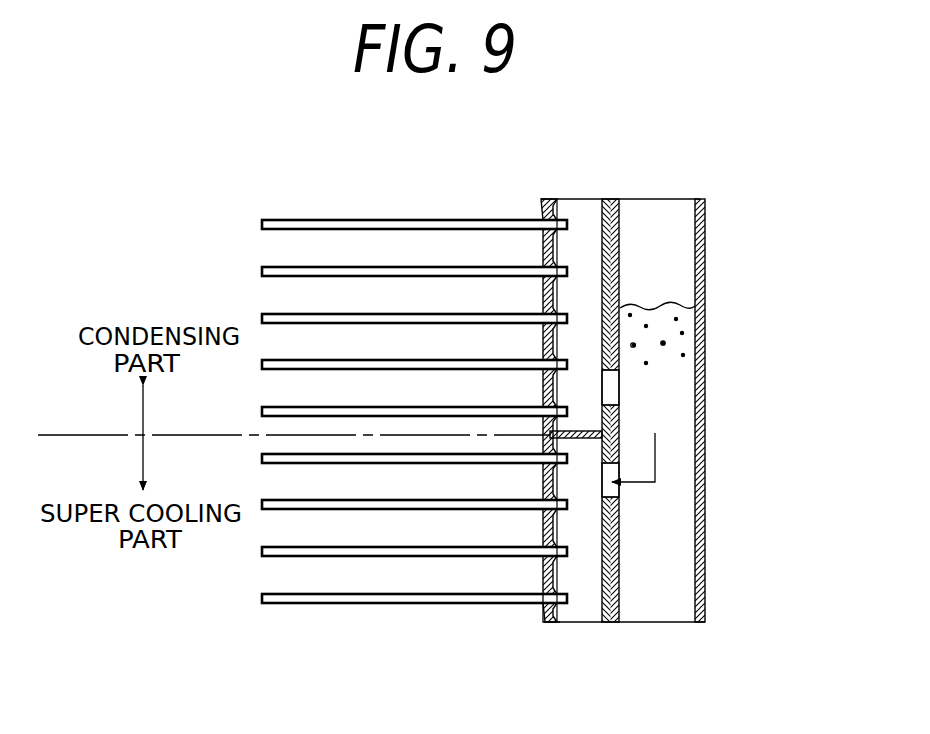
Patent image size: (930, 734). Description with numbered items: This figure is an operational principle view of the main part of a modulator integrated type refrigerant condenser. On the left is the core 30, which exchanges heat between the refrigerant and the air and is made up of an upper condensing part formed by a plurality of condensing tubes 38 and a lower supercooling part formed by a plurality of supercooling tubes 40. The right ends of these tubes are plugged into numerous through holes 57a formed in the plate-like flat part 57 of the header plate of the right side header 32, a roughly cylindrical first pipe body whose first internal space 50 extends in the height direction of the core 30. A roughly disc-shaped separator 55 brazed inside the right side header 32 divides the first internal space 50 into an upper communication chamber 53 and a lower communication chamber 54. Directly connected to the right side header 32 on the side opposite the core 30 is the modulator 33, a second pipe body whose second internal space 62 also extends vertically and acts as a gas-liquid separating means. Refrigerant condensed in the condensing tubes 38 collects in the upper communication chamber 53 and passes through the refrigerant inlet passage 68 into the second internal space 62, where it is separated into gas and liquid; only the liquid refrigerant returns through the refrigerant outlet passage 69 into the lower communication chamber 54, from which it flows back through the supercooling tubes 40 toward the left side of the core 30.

The core 30 is at (478, 202).
The right side header 32 is at (617, 228).
The modulator 33 is at (705, 257).
The condensing tubes 38 is at (372, 222).
The supercooling tubes 40 is at (331, 595).
The first internal space 50 is at (505, 659).
The upper communication chamber 53 is at (565, 385).
The lower communication chamber 54 is at (568, 520).
The separator 55 is at (607, 437).
The flat part 57 is at (540, 583).
The through holes 57a is at (567, 622).
The second internal space 62 is at (657, 305).
The refrigerant inlet passage 68 is at (607, 393).
The refrigerant outlet passage 69 is at (620, 493).